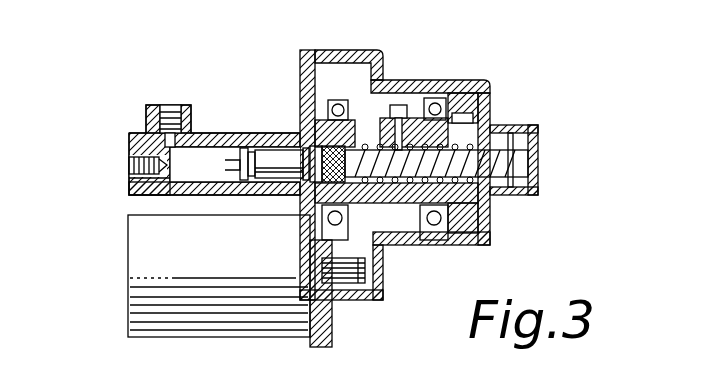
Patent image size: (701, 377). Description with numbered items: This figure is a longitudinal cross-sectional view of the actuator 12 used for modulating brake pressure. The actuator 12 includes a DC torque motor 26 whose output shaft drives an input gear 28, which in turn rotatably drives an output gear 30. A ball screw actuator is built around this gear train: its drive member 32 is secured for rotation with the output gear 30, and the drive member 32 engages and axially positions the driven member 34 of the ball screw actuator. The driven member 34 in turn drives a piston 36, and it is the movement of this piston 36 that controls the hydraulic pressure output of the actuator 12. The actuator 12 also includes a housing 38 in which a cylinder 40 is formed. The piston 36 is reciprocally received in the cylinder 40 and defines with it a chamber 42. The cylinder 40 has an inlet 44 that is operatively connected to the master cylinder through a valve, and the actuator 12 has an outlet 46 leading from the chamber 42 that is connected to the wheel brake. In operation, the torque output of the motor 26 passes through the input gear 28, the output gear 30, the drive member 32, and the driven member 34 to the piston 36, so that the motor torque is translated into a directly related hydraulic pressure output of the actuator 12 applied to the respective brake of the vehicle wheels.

The actuator 12 is at (107, 128).
The DC torque motor 26 is at (128, 278).
The input gear 28 is at (355, 300).
The output gear 30 is at (345, 62).
The drive member 32 is at (390, 95).
The driven member 34 is at (500, 190).
The piston 36 is at (267, 156).
The housing 38 is at (208, 160).
The cylinder 40 is at (133, 185).
The chamber 42 is at (213, 163).
The inlet 44 is at (171, 108).
The outlet 46 is at (130, 165).